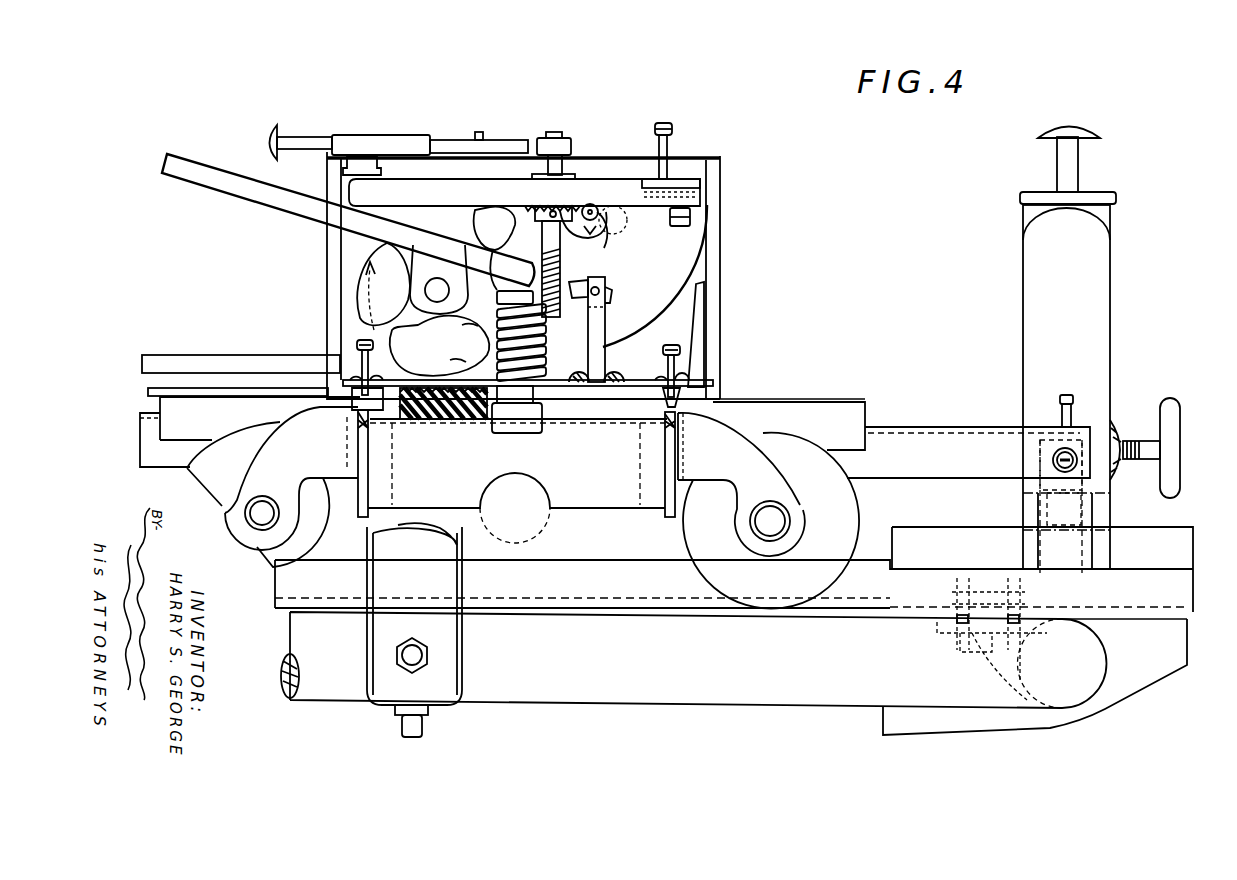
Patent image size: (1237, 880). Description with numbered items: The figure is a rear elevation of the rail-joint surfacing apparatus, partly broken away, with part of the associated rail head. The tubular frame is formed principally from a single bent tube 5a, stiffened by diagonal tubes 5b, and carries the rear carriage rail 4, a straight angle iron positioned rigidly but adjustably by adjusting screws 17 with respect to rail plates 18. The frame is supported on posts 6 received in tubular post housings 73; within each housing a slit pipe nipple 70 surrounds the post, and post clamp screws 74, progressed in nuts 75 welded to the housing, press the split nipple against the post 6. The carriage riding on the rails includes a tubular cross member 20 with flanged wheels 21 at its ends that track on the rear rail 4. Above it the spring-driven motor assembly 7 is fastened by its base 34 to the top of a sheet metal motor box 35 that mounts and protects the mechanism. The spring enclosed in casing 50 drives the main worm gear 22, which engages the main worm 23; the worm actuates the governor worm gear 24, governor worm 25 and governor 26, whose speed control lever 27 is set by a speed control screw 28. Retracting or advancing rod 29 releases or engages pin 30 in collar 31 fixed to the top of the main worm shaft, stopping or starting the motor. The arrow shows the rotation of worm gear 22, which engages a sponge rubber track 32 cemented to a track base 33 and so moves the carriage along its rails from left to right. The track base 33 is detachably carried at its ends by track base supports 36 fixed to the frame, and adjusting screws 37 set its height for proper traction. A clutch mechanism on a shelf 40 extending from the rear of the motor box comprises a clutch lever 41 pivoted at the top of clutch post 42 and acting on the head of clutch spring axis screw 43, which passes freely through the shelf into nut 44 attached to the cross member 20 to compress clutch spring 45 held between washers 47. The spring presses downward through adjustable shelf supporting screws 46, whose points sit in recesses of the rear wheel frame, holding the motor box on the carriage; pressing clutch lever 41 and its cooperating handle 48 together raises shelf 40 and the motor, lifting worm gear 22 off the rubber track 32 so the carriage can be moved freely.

The rear carriage rail 4 is at (633, 560).
The bent frame tube 5a is at (734, 673).
The diagonal tubes 5b is at (1066, 387).
The post 6 is at (422, 730).
The motor assembly 7 is at (722, 258).
The adjusting screws 17 is at (988, 628).
The rail plates 18 is at (950, 638).
The cross member 20 is at (513, 465).
The flanged wheels 21 is at (523, 508).
The main worm gear 22 is at (468, 346).
The main worm 23 is at (554, 131).
The governor worm gear 24 is at (518, 246).
The governor worm 25 is at (575, 208).
The governor 26 is at (605, 232).
The speed control lever 27 is at (652, 180).
The speed control screw 28 is at (670, 125).
The rod 29 is at (446, 137).
The pin 30 is at (546, 148).
The collar 31 is at (573, 150).
The sponge rubber track 32 is at (147, 393).
The track base 33 is at (140, 440).
The motor base 34 is at (524, 192).
The motor box 35 is at (712, 297).
The track base supports 36 is at (1045, 510).
The adjusting screws 37 is at (1062, 394).
The shelf 40 is at (720, 392).
The clutch lever 41 is at (272, 192).
The clutch post 42 is at (606, 322).
The clutch spring axis screw 43 is at (496, 298).
The nut 44 is at (540, 407).
The clutch spring 45 is at (546, 338).
The shelf supporting screws 46 is at (355, 340).
The washers 47 is at (461, 339).
The handle 48 is at (214, 356).
The spring casing 50 is at (412, 286).
The pipe nipple 70 is at (408, 542).
The post housing tube 73 is at (1117, 200).
The post clamp screws 74 is at (405, 645).
The nuts 75 is at (428, 645).